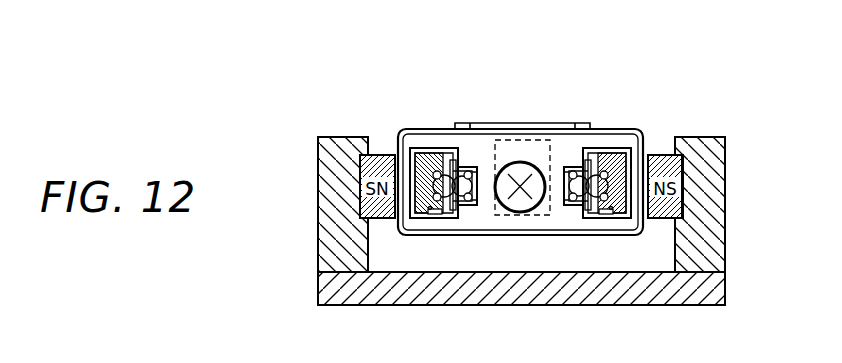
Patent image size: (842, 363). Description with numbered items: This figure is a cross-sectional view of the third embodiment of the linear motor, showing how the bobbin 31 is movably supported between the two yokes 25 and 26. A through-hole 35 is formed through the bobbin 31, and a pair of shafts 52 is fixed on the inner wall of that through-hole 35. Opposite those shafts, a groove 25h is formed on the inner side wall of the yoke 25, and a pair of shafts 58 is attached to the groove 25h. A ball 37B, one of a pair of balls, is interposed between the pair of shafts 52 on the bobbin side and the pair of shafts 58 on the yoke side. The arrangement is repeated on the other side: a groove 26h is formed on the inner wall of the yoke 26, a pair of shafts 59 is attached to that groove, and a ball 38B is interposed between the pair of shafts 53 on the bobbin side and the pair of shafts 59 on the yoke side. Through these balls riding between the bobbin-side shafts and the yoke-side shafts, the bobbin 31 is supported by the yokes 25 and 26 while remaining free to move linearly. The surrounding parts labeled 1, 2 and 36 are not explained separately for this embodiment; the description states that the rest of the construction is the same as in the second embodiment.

The frame 1 is at (378, 133).
The frame side wall 2 is at (664, 135).
The yoke 25 is at (425, 150).
The yoke 26 is at (617, 150).
The through-hole 35 is at (452, 162).
The ball bearing 36 is at (590, 162).
The ball 37B is at (481, 170).
The ball 38B is at (560, 170).
The bobbin 31 is at (522, 140).
The groove 25h is at (440, 220).
The groove 26h is at (601, 220).
The shafts 52 is at (480, 200).
The shafts 53 is at (562, 200).
The shafts 58 is at (437, 204).
The shafts 59 is at (604, 204).